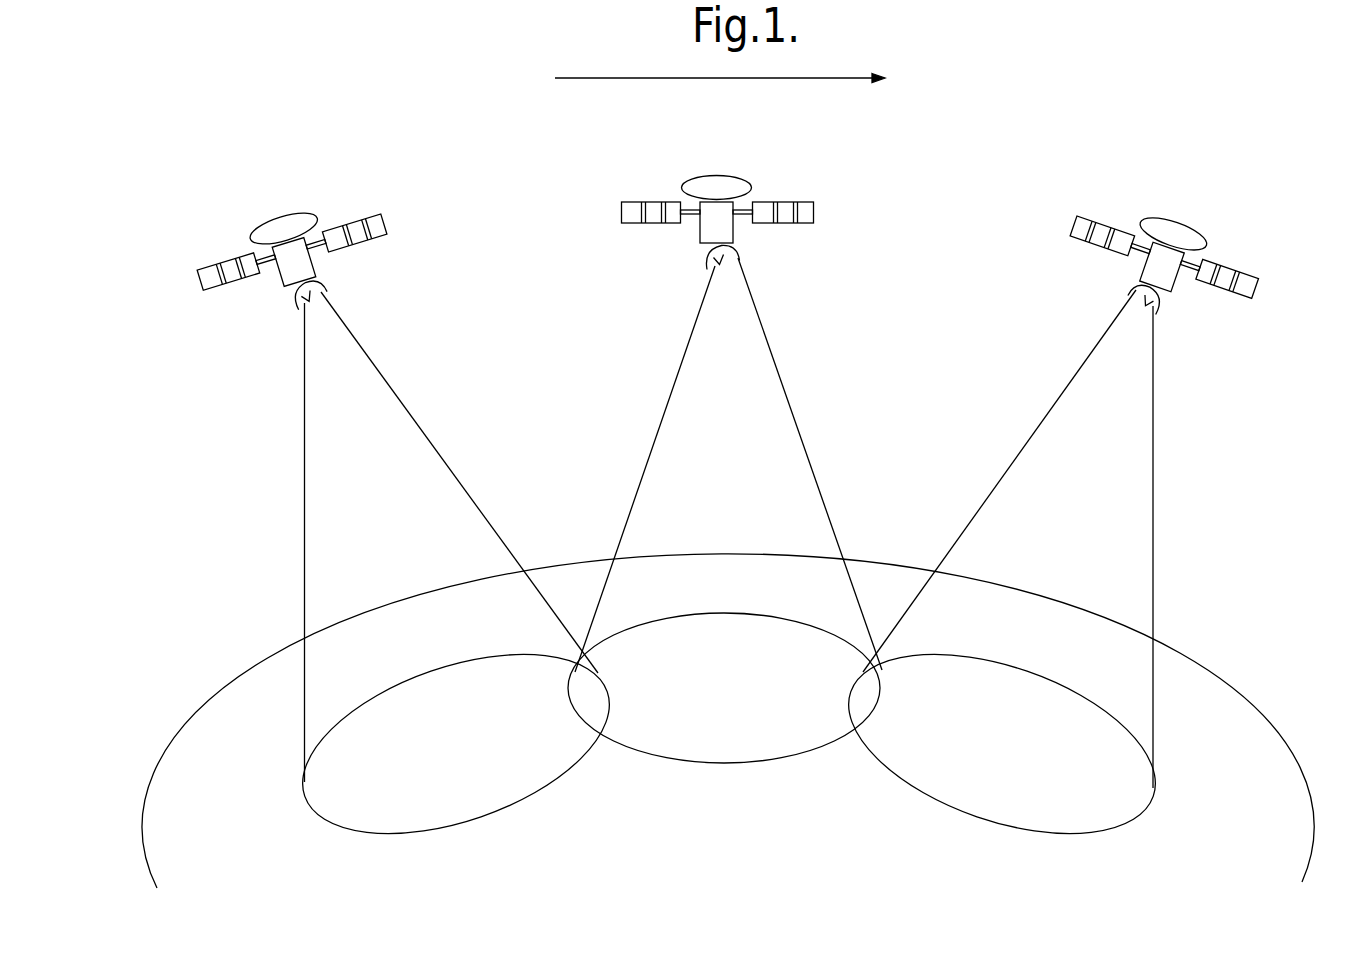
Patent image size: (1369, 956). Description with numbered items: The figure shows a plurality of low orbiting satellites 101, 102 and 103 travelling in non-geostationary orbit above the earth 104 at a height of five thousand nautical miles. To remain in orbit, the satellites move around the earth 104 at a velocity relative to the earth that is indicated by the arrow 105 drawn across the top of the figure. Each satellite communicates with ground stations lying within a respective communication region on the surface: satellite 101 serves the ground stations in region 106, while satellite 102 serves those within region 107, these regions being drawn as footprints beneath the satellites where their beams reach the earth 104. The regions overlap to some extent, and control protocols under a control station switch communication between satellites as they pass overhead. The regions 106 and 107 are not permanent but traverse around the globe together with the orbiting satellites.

The satellite 101 is at (347, 230).
The satellite 102 is at (798, 210).
The satellite 103 is at (1082, 230).
The earth 104 is at (571, 587).
The arrow 105 is at (622, 78).
The region 106 is at (413, 723).
The region 107 is at (721, 652).